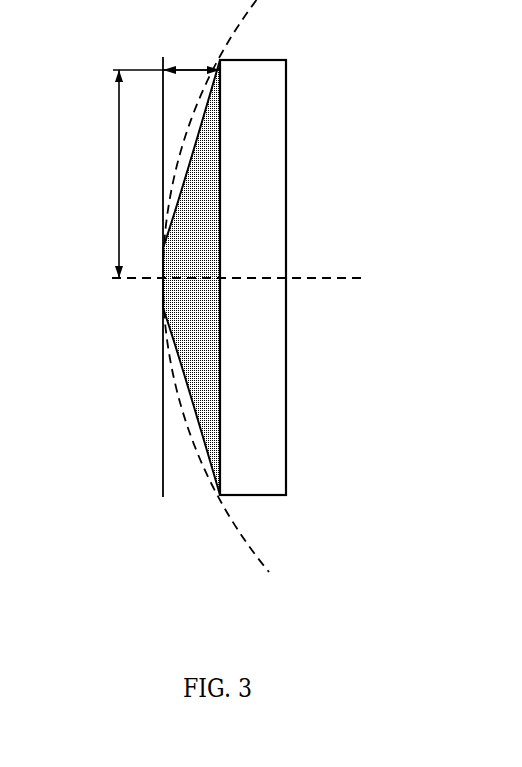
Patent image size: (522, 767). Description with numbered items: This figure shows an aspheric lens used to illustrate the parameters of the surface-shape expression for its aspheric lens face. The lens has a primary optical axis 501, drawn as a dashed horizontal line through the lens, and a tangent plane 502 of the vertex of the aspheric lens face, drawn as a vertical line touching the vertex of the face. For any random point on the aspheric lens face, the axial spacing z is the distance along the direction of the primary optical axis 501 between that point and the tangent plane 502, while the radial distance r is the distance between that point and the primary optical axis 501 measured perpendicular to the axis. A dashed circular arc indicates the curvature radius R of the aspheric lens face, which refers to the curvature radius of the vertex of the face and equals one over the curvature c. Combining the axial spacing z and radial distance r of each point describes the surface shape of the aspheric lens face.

The primary optical axis 501 is at (323, 278).
The tangent plane of a vertex of the aspheric lens face 502 is at (163, 438).
The radial direction r is at (155, 174).
The axial spacing z is at (191, 46).
The curvature radius R is at (264, 303).